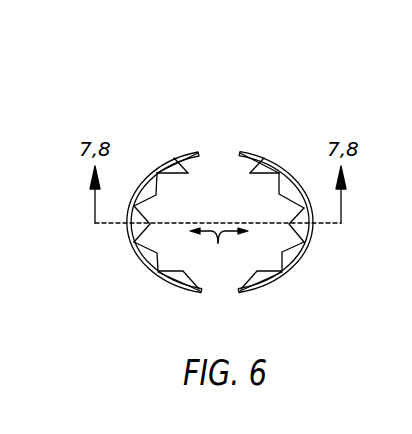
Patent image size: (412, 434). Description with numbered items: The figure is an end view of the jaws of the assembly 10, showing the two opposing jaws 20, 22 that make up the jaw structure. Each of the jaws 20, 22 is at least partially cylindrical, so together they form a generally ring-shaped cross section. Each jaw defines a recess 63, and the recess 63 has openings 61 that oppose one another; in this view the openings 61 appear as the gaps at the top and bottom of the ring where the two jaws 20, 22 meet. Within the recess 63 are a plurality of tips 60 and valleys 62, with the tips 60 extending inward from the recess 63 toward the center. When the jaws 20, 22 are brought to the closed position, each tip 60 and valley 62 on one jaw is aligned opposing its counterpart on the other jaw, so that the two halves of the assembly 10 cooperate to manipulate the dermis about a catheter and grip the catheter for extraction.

The assembly 10 is at (256, 99).
The jaw 20 is at (288, 152).
The jaw 22 is at (170, 152).
The tips 60 is at (250, 173).
The openings 61 is at (218, 243).
The valleys 62 is at (279, 174).
The recess 63 is at (131, 234).